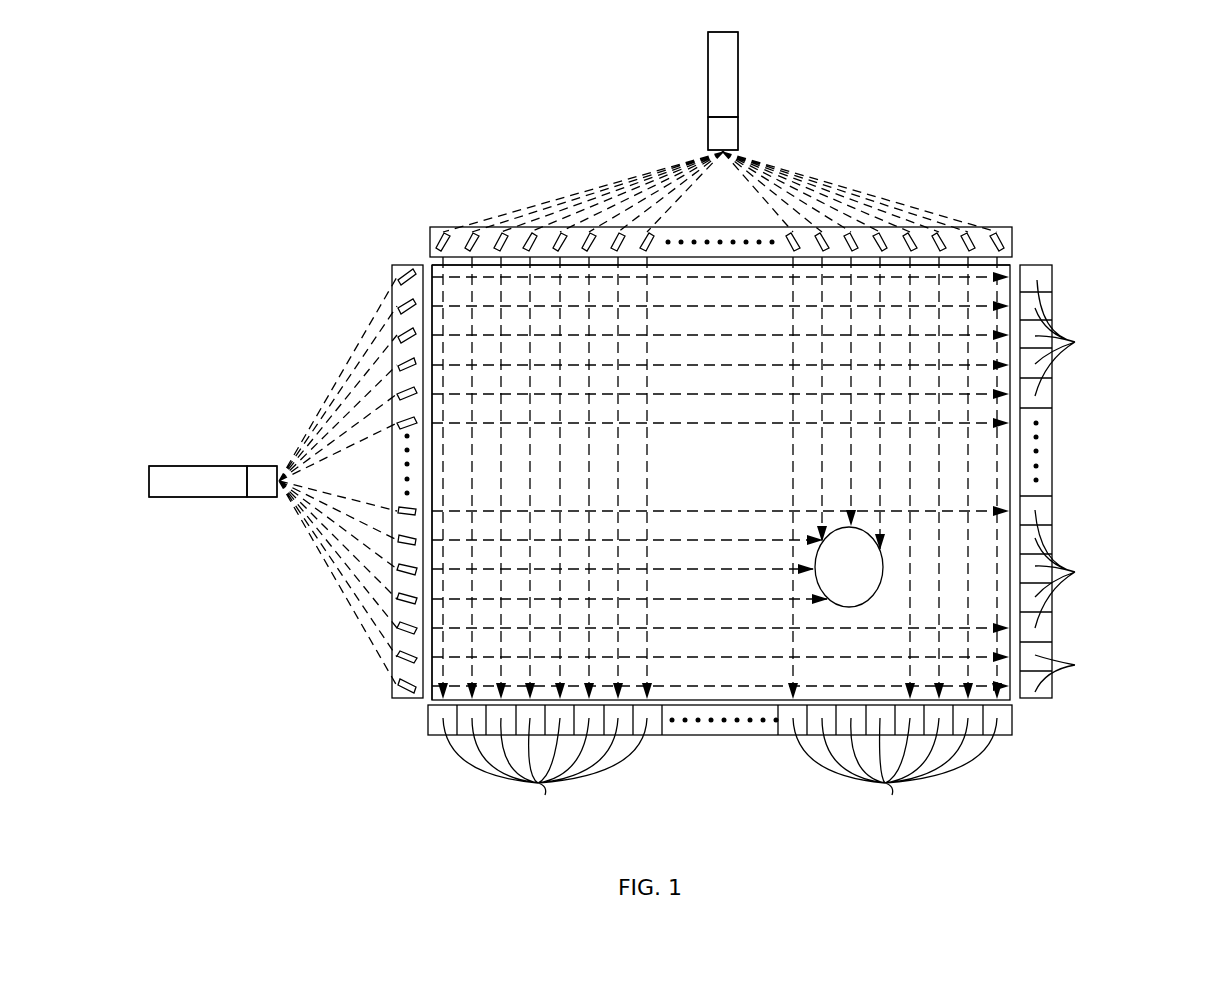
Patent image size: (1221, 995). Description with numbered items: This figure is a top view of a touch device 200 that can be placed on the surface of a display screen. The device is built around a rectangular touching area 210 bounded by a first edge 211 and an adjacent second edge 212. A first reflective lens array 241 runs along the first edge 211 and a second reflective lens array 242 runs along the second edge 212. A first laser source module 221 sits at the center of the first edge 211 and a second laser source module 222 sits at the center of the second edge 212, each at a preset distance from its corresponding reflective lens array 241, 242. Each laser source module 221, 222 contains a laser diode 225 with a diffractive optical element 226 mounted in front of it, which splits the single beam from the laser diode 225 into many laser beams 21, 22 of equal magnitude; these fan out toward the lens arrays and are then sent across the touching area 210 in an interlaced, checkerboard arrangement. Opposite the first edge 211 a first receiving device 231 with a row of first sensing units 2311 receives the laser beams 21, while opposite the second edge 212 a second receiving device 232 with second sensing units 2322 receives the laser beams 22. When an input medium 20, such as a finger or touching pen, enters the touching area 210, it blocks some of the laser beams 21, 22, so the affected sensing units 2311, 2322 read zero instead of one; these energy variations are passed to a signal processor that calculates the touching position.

The touch device 200 is at (1162, 108).
The touch object 20 is at (838, 563).
The laser beams 21 is at (468, 623).
The laser beams 22 is at (898, 277).
The touching area 210 is at (770, 675).
The first edge 211 is at (450, 268).
The second edge 212 is at (432, 300).
The first laser source module 221 is at (592, 62).
The second laser source module 222 is at (146, 370).
The laser diode 225 is at (718, 88).
The diffractive optical element 226 is at (718, 138).
The first receiving device 231 is at (721, 786).
The second receiving device 232 is at (1113, 482).
The first reflective lens array 241 is at (518, 230).
The second reflective lens array 242 is at (404, 382).
The first sensing units 2311 is at (1015, 818).
The second sensing units 2322 is at (1150, 700).